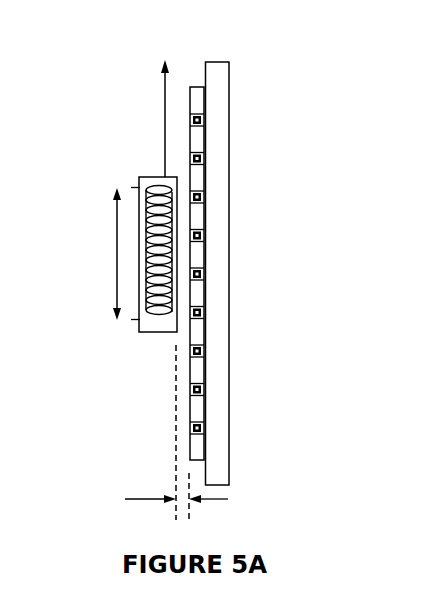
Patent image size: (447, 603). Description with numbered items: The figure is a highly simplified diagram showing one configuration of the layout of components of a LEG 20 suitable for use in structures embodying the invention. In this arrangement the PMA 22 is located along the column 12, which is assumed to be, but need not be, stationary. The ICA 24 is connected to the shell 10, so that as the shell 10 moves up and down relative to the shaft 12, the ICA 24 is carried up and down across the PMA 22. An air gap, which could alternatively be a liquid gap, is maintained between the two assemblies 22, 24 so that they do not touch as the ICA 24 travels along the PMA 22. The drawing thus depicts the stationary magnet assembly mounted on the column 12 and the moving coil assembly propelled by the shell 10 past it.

The LEG 20 is at (62, 80).
The shell 10 is at (135, 99).
The column 12 is at (259, 251).
The PMA 22 is at (262, 269).
The ICA 24 is at (117, 224).